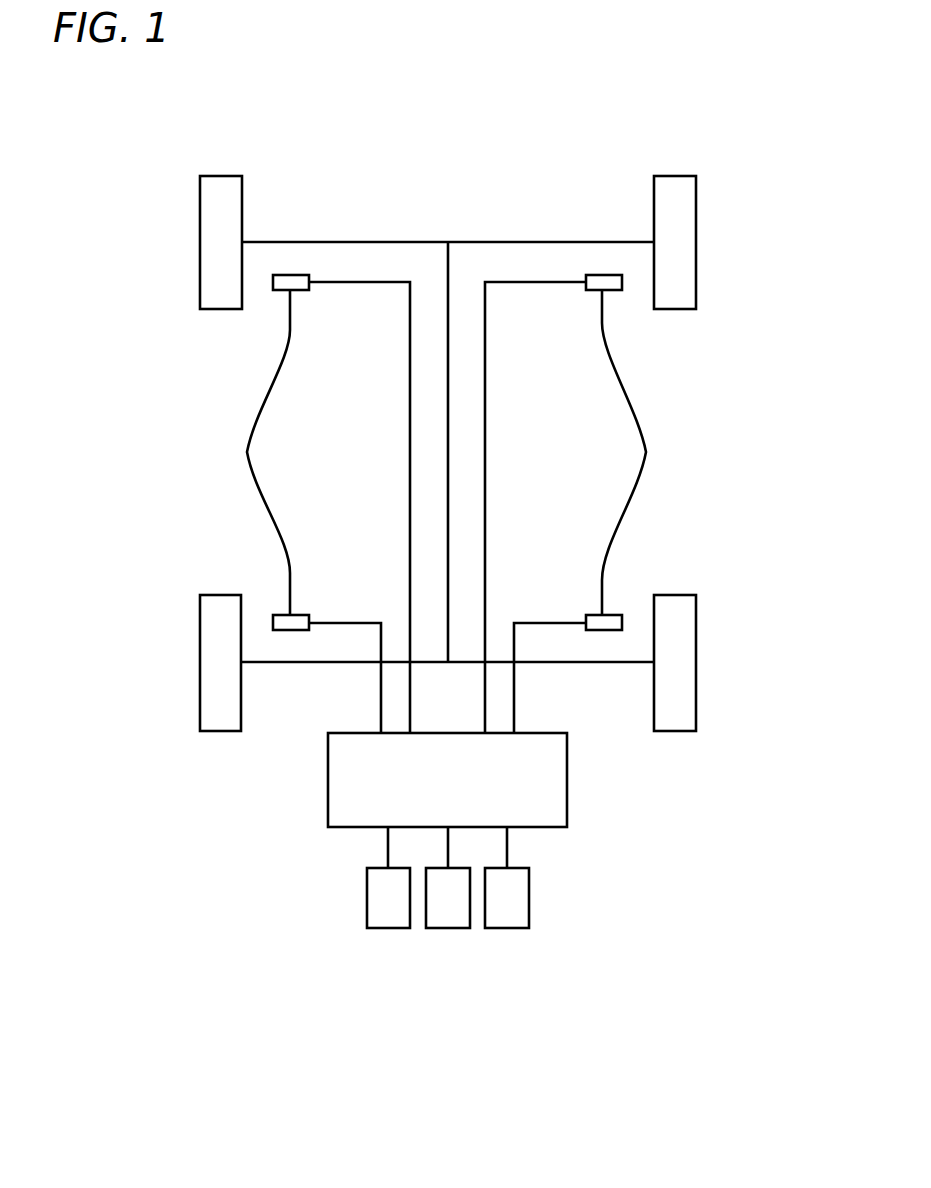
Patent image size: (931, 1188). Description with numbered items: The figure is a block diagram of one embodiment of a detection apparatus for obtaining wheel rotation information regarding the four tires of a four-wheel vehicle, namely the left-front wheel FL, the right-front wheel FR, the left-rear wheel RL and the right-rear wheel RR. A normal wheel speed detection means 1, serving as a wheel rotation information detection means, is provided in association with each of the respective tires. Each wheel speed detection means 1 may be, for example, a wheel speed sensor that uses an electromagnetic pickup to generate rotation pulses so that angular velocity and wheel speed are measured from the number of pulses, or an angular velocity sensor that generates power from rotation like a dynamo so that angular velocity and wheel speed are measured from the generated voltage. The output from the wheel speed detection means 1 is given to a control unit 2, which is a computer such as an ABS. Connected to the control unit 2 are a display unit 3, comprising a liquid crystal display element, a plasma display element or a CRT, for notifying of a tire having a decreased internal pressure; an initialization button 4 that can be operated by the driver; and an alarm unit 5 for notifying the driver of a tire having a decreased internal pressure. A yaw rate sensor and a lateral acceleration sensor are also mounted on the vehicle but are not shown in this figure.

The wheel speed detection means 1 is at (446, 452).
The control unit 2 is at (567, 782).
The display unit 3 is at (388, 930).
The initialization button 4 is at (448, 930).
The alarm unit 5 is at (507, 930).
The left-front wheel FL is at (200, 225).
The right-front wheel FR is at (696, 225).
The left-rear wheel RL is at (200, 645).
The right-rear wheel RR is at (696, 645).